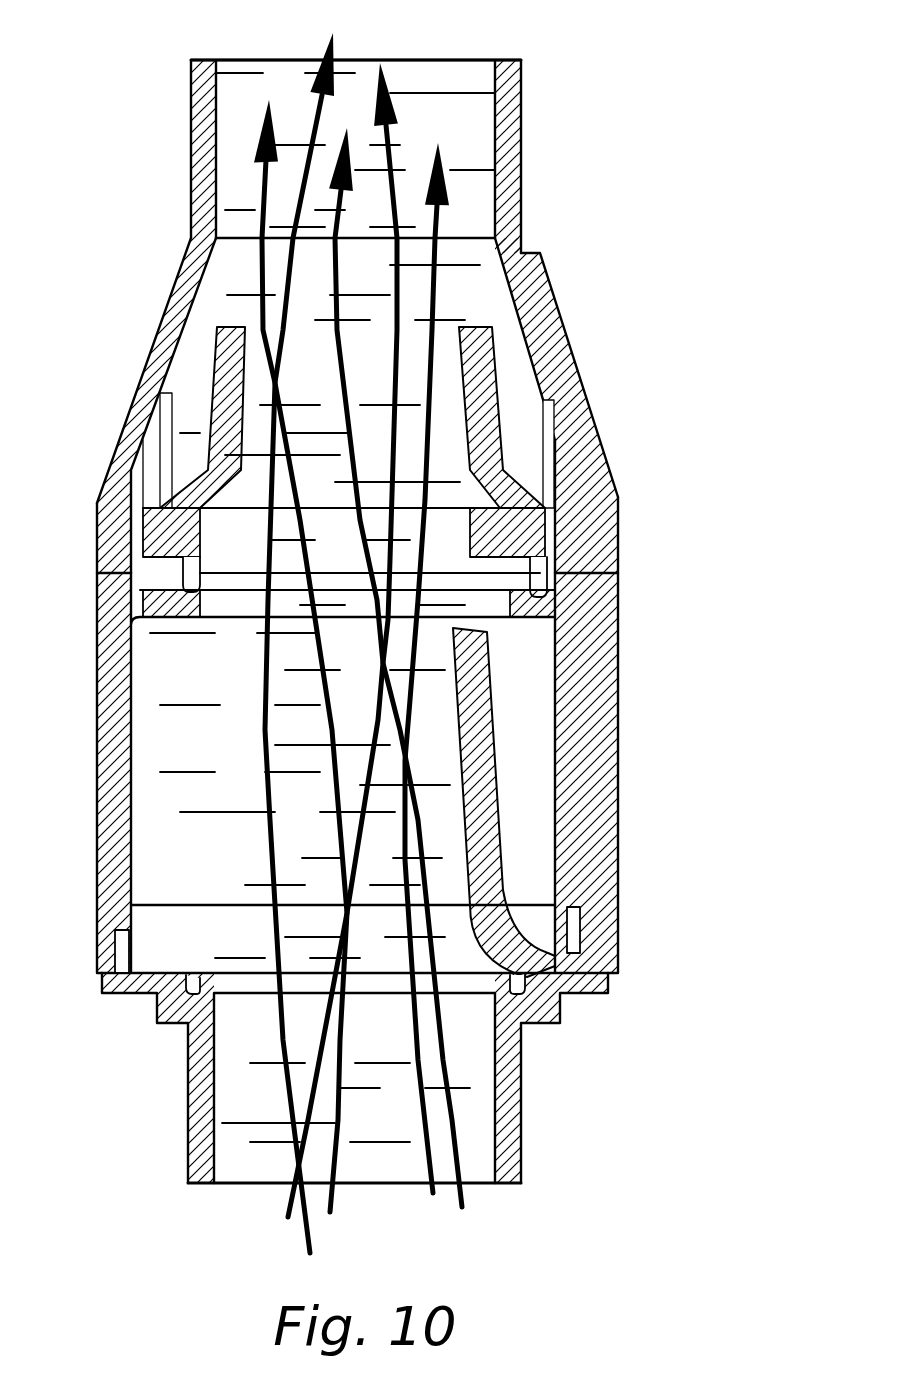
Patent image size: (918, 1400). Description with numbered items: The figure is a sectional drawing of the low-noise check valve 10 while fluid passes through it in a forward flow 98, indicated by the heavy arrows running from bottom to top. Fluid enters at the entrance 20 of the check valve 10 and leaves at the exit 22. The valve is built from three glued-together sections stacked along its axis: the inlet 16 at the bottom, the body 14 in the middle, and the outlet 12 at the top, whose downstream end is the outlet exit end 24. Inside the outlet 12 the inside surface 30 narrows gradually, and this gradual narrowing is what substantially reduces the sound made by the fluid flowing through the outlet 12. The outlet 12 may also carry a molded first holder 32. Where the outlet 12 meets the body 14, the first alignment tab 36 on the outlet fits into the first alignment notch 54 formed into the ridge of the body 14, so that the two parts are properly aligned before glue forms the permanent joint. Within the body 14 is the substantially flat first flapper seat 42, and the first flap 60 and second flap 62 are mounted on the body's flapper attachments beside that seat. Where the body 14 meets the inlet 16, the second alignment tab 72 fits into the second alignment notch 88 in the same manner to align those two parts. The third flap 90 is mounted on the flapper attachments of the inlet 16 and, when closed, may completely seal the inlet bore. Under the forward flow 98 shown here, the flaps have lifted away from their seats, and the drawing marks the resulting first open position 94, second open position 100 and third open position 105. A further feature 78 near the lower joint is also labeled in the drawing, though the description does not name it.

The check valve 10 is at (694, 97).
The outlet 12 is at (592, 388).
The body 14 is at (612, 748).
The inlet 16 is at (528, 1088).
The entrance 20 is at (397, 1188).
The exit 22 is at (437, 59).
The outlet exit end 24 is at (521, 62).
The inside surface 30 is at (512, 281).
The first holder 32 is at (150, 548).
The first alignment tab 36 is at (143, 505).
The first flapper seat 42 is at (508, 573).
The first alignment notch 54 is at (127, 525).
The first flap 60 is at (233, 373).
The second flap 62 is at (477, 366).
The second alignment tab 72 is at (133, 920).
The seal lip 78 is at (208, 990).
The second alignment notch 88 is at (128, 920).
The third flap 90 is at (481, 667).
The first open position 94 is at (195, 333).
The forward flow 98 is at (257, 133).
The second open position 100 is at (484, 337).
The third open position 105 is at (492, 698).